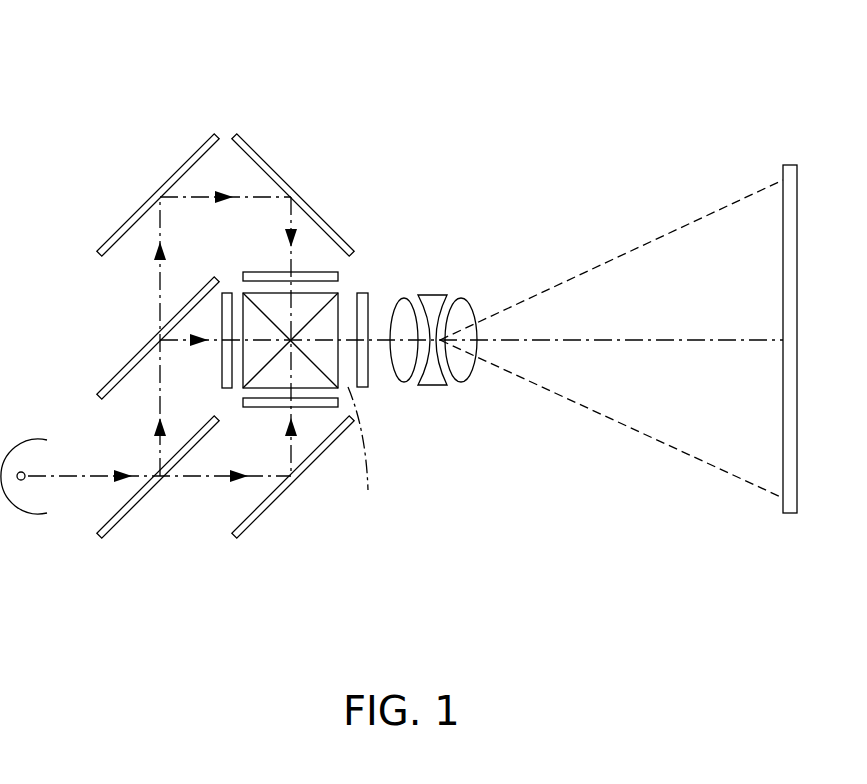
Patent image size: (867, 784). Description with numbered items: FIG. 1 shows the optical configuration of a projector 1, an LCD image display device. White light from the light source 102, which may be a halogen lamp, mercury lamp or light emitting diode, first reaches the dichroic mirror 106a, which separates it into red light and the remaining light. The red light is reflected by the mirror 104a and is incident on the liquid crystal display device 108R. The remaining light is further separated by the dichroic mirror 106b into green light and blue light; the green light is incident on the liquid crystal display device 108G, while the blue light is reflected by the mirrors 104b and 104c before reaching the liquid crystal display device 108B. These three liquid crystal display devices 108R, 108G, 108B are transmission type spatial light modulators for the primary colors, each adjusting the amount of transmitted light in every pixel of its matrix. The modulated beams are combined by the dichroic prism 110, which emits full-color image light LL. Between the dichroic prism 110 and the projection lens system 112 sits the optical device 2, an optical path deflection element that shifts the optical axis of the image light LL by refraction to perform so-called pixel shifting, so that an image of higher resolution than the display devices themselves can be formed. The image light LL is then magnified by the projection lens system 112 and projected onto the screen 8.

The projector 1 is at (667, 100).
The optical device 2 is at (368, 375).
The screen 8 is at (790, 513).
The light source 102 is at (25, 507).
The mirror 104a is at (263, 515).
The mirror 104b is at (180, 162).
The mirror 104c is at (270, 160).
The dichroic mirror 106a is at (127, 515).
The dichroic mirror 106b is at (120, 372).
The liquid crystal display device 108B is at (340, 276).
The liquid crystal display device 108G is at (222, 355).
The liquid crystal display device 108R is at (268, 408).
The dichroic prism 110 is at (343, 293).
The projection lens system 112 is at (475, 388).
The image light LL is at (365, 453).